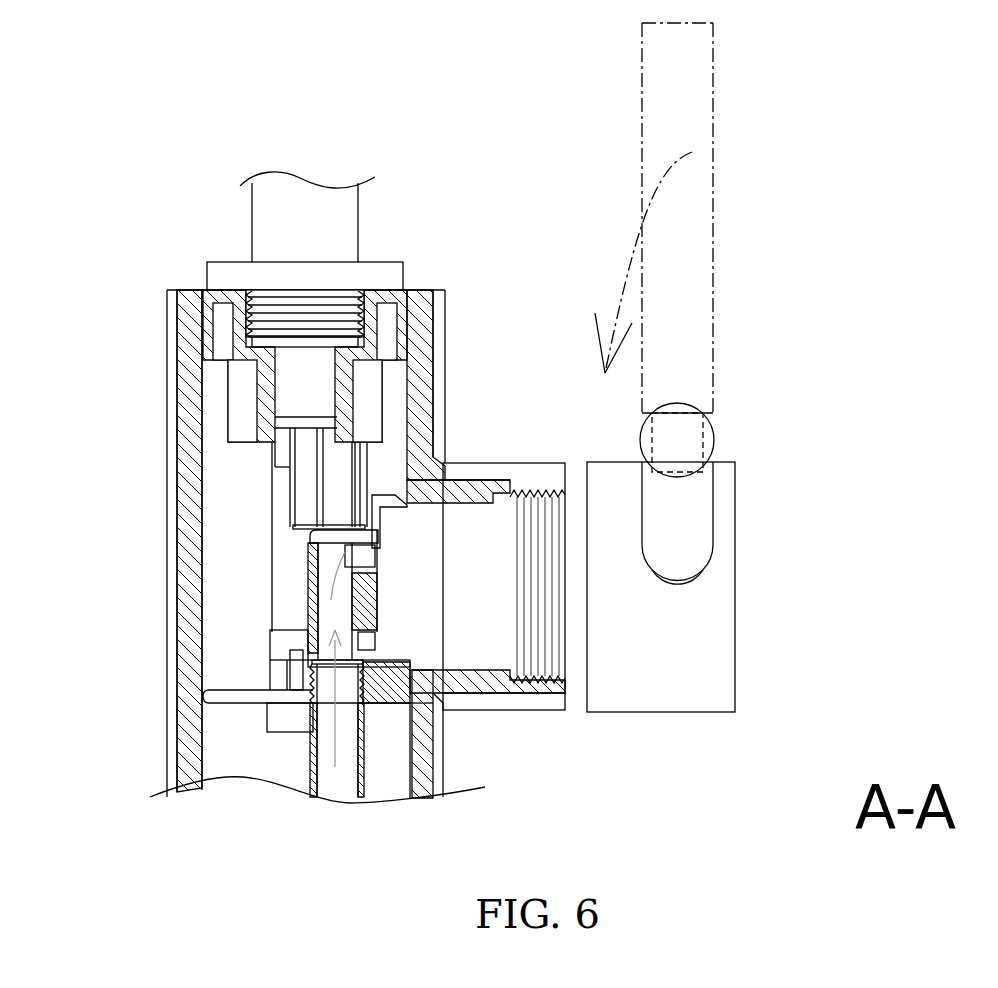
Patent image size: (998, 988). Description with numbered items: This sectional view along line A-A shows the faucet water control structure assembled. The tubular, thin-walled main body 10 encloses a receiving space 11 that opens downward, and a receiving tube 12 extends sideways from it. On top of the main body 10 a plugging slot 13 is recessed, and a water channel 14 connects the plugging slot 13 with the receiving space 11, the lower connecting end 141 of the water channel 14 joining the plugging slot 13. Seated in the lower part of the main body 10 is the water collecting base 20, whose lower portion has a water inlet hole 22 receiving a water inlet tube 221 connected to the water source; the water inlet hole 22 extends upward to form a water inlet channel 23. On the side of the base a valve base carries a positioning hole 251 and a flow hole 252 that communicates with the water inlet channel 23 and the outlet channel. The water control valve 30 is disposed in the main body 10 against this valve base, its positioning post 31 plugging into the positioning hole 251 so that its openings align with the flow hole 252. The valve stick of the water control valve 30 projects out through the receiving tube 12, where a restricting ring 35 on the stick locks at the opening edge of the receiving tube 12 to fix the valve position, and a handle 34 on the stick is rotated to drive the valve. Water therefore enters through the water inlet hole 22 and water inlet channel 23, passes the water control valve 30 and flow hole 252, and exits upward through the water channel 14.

The main body 10 is at (167, 451).
The receiving space 11 is at (252, 620).
The receiving tube 12 is at (477, 473).
The plugging slot 13 is at (248, 312).
The connecting end 141 is at (305, 314).
The water channel 14 is at (333, 220).
The water collecting base 20 is at (238, 700).
The water inlet hole 22 is at (300, 655).
The water inlet tube 221 is at (332, 778).
The water inlet channel 23 is at (315, 573).
The positioning hole 251 is at (320, 673).
The positioning post 31 is at (361, 682).
The flow hole 252 is at (376, 494).
The water control valve 30 is at (500, 507).
The restricting ring 35 is at (547, 667).
The handle 34 is at (725, 577).